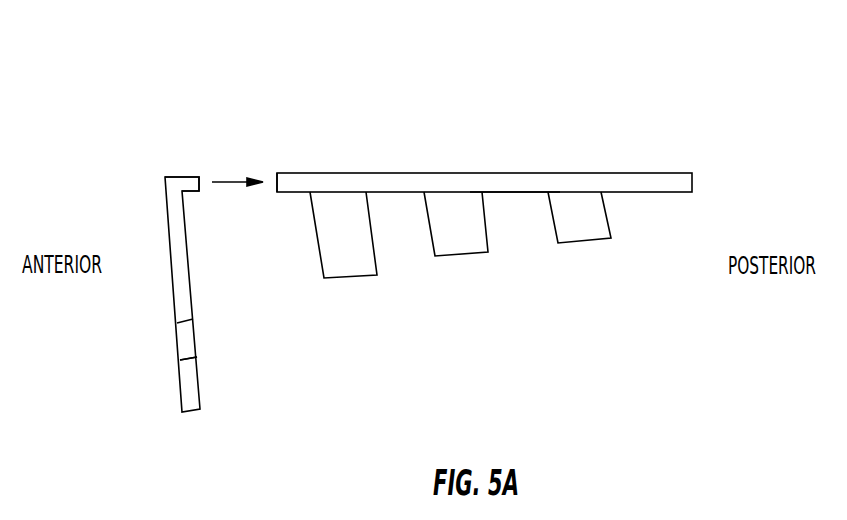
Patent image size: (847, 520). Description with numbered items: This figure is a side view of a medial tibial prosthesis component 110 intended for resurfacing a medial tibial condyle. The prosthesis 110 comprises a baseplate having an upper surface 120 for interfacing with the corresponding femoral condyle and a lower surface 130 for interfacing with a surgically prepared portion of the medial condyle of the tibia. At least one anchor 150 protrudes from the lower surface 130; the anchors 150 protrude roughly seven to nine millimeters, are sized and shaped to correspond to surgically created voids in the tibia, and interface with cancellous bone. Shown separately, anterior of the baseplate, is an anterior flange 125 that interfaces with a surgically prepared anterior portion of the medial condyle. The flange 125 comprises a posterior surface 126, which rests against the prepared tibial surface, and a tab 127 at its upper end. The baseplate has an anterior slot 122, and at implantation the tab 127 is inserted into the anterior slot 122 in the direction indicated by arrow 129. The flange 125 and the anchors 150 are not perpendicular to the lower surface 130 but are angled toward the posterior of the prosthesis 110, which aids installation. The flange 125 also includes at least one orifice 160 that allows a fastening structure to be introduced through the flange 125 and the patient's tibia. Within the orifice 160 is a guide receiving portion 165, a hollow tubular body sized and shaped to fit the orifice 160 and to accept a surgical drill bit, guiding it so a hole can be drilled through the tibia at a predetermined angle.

The medial tibial prosthesis component 110 is at (442, 86).
The upper surface 120 is at (510, 173).
The anterior slot 122 is at (277, 180).
The anterior flange 125 is at (172, 300).
The posterior surface 126 is at (195, 318).
The tab 127 is at (183, 177).
The arrow 129 is at (232, 182).
The lower surface 130 is at (512, 193).
The anchor 150 is at (363, 277).
The orifice 160 is at (179, 357).
The guide receiving portion 165 is at (179, 360).